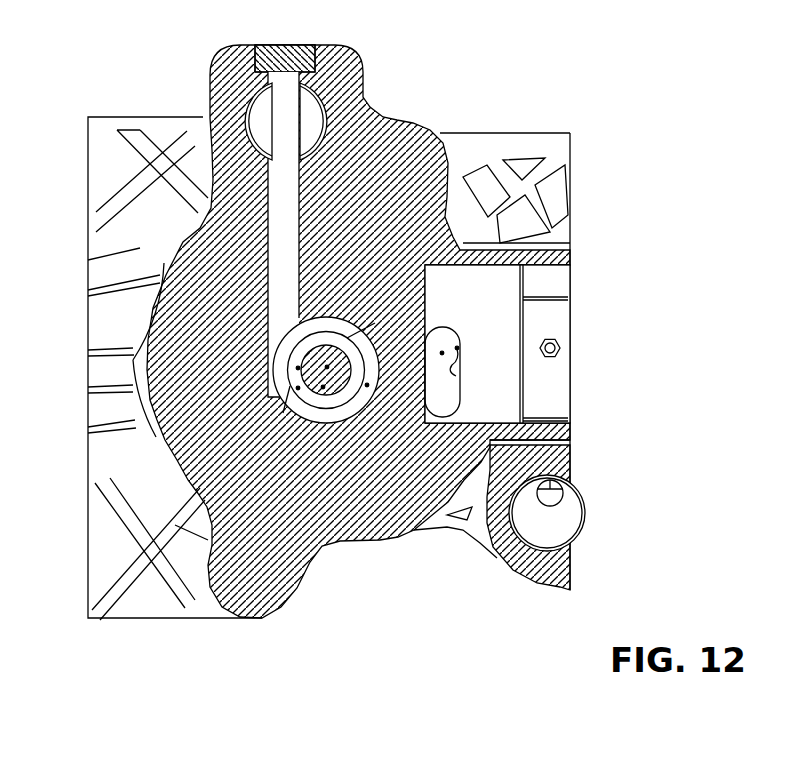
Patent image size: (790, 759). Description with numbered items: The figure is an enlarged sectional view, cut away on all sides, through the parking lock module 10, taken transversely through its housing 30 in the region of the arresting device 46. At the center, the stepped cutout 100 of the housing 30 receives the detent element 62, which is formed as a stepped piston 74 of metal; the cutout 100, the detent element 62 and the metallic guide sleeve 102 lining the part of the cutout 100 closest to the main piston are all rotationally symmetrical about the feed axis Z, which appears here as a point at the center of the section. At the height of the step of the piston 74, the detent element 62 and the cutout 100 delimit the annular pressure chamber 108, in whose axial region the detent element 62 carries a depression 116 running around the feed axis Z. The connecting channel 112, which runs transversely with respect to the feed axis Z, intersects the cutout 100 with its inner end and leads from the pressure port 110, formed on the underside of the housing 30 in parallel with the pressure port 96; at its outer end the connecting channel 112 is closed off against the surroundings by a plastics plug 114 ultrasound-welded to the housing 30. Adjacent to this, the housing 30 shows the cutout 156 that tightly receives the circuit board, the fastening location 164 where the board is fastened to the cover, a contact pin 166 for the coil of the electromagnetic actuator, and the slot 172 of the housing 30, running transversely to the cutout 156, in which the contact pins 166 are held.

The parking lock module 10 is at (468, 95).
The housing 30 is at (387, 118).
The arresting device 46 is at (337, 411).
The detent element 62 is at (358, 398).
The stepped piston 74 is at (323, 387).
The pressure port 96 is at (565, 510).
The stepped cutout 100 is at (328, 318).
The guide sleeve 102 is at (367, 385).
The annular pressure chamber 108 is at (298, 388).
The pressure port 110 is at (309, 114).
The connecting channel 112 is at (443, 134).
The plastics plug 114 is at (271, 62).
The depression 116 is at (298, 368).
The cutout 156 is at (540, 268).
The fastening of circuit board 164 is at (560, 350).
The contact pin 166 is at (442, 353).
The slot 172 is at (456, 376).
The feed axis Z is at (327, 367).